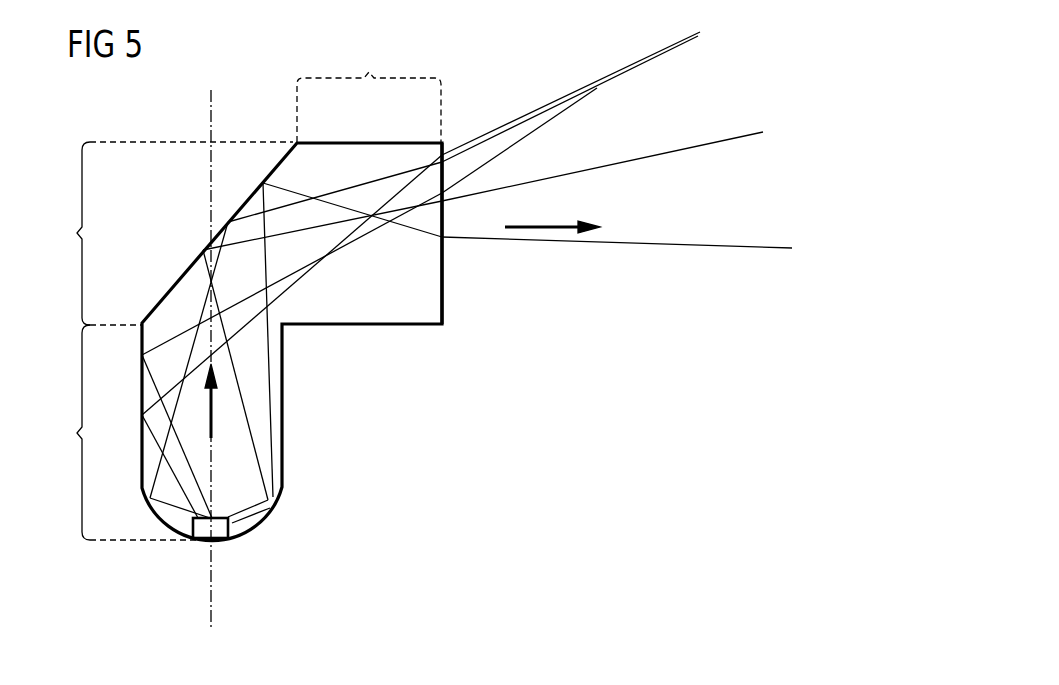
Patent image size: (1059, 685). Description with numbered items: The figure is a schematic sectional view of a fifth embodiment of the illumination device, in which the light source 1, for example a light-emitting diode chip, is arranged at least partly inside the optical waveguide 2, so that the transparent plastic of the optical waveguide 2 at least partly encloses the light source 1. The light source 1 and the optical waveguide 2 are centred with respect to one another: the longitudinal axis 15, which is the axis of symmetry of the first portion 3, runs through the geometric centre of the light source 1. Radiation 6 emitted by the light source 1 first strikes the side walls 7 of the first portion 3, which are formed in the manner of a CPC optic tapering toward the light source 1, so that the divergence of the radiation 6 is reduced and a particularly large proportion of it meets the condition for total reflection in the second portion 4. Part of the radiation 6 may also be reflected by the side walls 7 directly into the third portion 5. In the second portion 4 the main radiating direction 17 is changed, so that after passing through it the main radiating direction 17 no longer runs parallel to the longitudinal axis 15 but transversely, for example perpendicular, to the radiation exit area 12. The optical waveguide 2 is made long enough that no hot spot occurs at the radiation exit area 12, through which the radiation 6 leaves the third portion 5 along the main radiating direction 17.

The light source 1 is at (218, 542).
The optical waveguide 2 is at (298, 347).
The first portion 3 is at (135, 432).
The second portion 4 is at (175, 233).
The third portion 5 is at (369, 90).
The electromagnetic radiation 6 is at (253, 455).
The side walls 7 is at (268, 512).
The radiation exit area 12 is at (443, 270).
The longitudinal axis 15 is at (212, 614).
The main radiating direction 17 is at (213, 405).